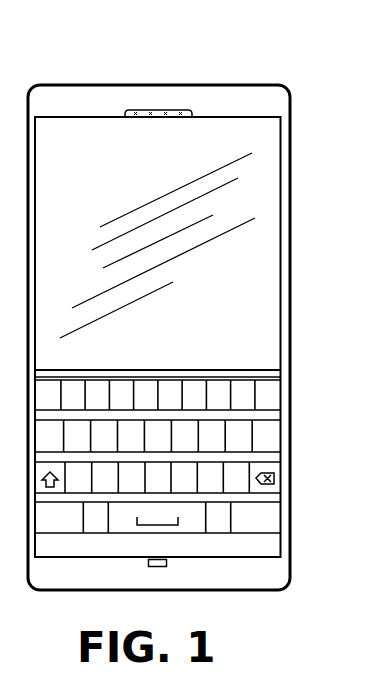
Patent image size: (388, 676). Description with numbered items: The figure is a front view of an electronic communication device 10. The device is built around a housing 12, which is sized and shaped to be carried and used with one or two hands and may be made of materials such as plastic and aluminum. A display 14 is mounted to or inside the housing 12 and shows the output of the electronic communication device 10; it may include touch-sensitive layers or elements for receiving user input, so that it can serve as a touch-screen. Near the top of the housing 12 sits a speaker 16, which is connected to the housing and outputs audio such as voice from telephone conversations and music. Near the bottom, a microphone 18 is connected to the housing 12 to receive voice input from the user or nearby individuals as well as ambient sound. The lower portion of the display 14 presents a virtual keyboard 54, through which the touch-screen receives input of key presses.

The electronic communication device 10 is at (80, 68).
The housing 12 is at (291, 152).
The display 14 is at (267, 205).
The speaker 16 is at (160, 110).
The microphone 18 is at (157, 567).
The virtual keyboard 54 is at (276, 427).